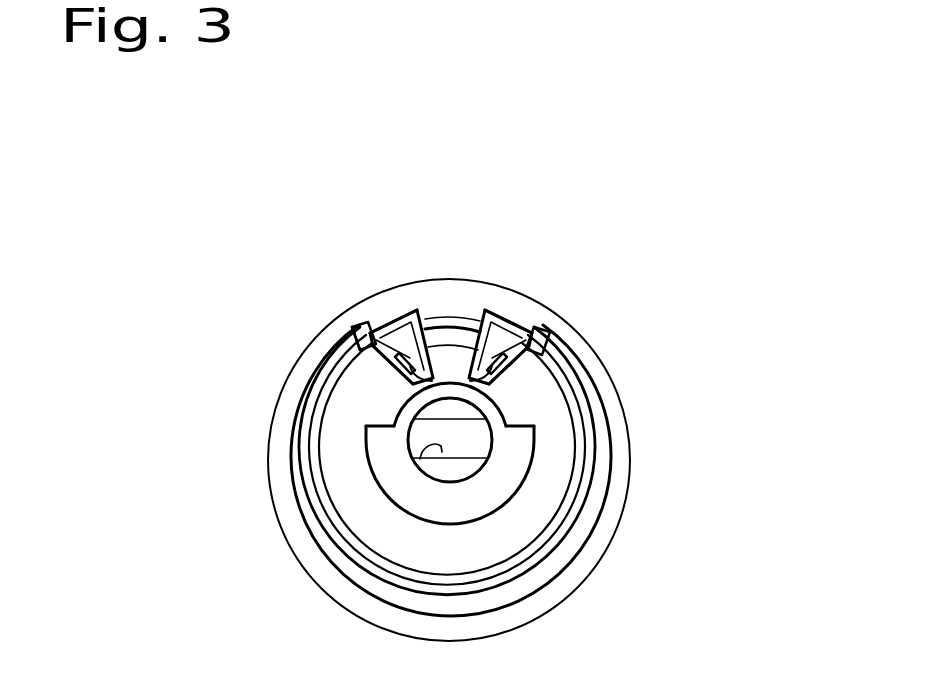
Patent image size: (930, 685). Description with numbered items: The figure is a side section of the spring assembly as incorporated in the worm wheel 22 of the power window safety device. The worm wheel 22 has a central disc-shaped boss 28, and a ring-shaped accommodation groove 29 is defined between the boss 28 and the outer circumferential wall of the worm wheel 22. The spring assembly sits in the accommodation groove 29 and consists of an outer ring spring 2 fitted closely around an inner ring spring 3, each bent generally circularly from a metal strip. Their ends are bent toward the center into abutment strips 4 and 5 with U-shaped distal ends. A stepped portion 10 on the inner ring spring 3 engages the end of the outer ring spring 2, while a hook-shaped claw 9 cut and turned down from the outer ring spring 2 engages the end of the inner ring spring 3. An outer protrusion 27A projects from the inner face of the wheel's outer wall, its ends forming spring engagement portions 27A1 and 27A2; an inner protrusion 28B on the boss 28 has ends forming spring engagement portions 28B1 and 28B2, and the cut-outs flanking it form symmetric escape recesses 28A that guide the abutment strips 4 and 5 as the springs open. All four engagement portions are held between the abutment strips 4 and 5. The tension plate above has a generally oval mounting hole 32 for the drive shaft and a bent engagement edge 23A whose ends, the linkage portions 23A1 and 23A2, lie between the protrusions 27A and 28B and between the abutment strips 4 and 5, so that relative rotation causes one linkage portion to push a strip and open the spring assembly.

The outer ring spring 2 is at (593, 435).
The inner ring spring 3 is at (398, 325).
The abutment strip 4 is at (401, 312).
The abutment strip 5 is at (520, 330).
The hook-shaped claw 9 is at (535, 345).
The stepped portion 10 is at (355, 333).
The worm wheel 22 is at (585, 343).
The engagement edge 23A is at (475, 320).
The linkage portion 23A1 is at (395, 330).
The linkage portion 23A2 is at (528, 335).
The outer protrusion 27A is at (458, 335).
The spring engagement portion 27A1 is at (413, 310).
The spring engagement portion 27A2 is at (488, 310).
The boss 28 is at (467, 488).
The escape recess 28A is at (420, 380).
The inner protrusion 28B is at (447, 372).
The spring engagement portion 28B1 is at (398, 360).
The spring engagement portion 28B2 is at (508, 370).
The accommodation groove 29 is at (395, 592).
The mounting hole 32 is at (417, 460).